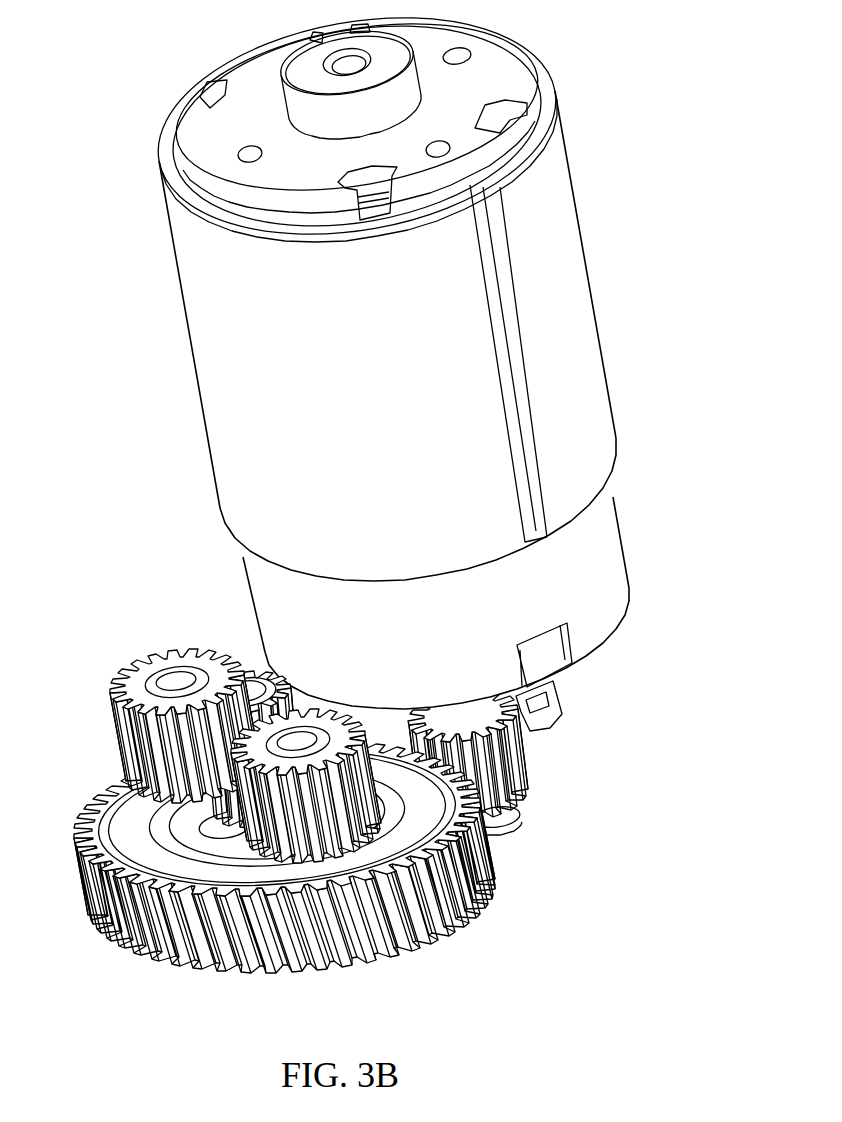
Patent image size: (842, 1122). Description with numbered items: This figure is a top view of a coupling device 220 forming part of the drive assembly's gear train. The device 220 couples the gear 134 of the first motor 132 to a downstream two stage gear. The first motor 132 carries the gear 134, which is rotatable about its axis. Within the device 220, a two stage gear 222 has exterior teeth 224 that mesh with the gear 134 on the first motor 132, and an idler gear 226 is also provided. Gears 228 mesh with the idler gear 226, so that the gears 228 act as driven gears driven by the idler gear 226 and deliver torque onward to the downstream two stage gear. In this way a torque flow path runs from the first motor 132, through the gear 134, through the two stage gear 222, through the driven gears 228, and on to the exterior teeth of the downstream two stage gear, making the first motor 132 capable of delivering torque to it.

The first motor 132 is at (572, 288).
The gear 134 is at (527, 776).
The device 220 is at (296, 817).
The two stage gear 222 is at (298, 863).
The exterior teeth 224 is at (433, 896).
The idler gear 226 is at (210, 655).
The gears 228 is at (118, 714).